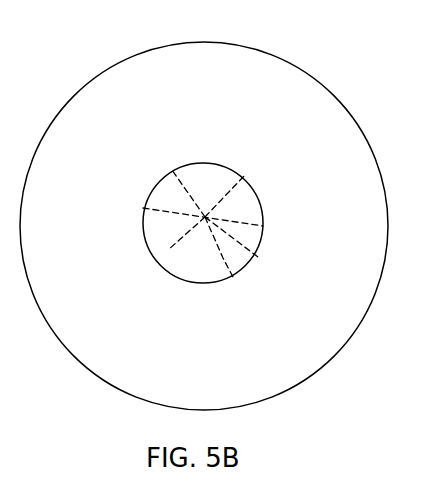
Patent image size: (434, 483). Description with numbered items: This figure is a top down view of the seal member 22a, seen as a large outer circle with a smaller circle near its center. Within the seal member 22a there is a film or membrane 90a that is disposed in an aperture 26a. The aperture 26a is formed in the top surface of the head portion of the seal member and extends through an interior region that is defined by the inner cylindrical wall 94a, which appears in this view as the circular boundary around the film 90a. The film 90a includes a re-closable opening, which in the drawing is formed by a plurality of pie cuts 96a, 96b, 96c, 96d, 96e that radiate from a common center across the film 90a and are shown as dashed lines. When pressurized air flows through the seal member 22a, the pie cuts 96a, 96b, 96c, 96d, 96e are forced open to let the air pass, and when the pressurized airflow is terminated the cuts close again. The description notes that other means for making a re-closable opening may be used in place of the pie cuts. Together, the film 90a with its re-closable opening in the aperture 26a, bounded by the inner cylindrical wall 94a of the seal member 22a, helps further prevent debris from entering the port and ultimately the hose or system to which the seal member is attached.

The seal member 22a is at (327, 88).
The film or membrane 90a is at (219, 172).
The inner cylindrical wall 94a is at (160, 266).
The aperture 26a is at (252, 214).
The pie cut 96a is at (258, 257).
The pie cut 96b is at (223, 258).
The pie cut 96c is at (168, 250).
The pie cut 96d is at (172, 170).
The pie cut 96e is at (245, 175).